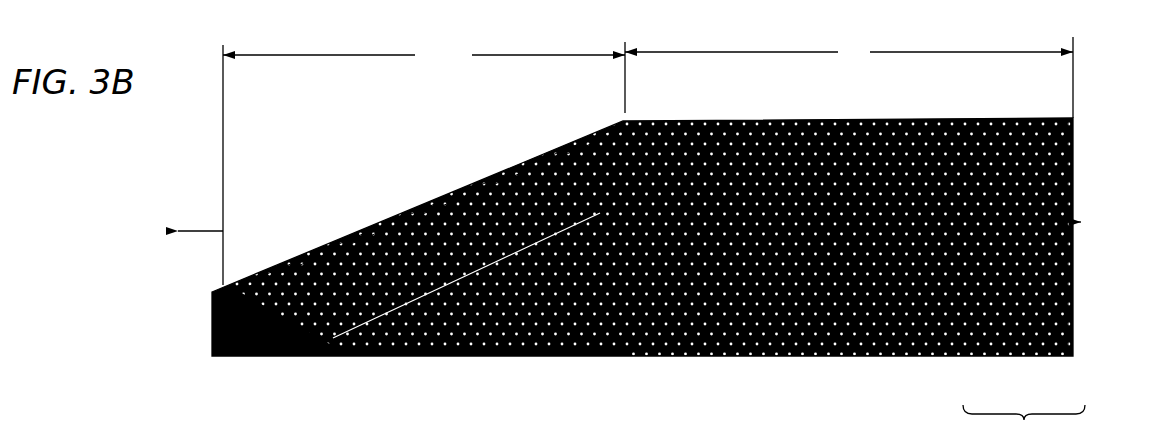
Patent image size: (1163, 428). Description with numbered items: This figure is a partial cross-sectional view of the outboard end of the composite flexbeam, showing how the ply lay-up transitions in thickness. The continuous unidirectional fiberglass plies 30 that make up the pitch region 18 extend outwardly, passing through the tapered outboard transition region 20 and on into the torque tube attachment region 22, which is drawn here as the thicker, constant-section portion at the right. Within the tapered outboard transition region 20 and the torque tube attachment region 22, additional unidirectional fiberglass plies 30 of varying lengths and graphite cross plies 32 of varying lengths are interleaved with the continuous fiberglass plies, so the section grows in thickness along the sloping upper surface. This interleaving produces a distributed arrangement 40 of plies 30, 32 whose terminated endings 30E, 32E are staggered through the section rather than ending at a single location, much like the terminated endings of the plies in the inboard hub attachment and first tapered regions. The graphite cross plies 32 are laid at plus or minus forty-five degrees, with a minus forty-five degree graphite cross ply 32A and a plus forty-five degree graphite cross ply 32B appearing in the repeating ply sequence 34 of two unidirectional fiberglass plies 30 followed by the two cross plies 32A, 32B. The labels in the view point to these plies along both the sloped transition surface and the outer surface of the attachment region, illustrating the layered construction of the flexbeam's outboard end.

The pitch region 18 is at (186, 233).
The tapered outboard transition region 20 is at (424, 163).
The torque tube attachment region 22 is at (849, 77).
The unidirectional fiberglass plies 30 is at (537, 157).
The terminated endings of the unidirectional fiberglass plies 30E is at (392, 357).
The graphite cross plies 32 is at (1024, 416).
The minus forty-five degree graphite cross ply 32A is at (392, 219).
The plus forty-five degree graphite cross ply 32B is at (447, 195).
The terminated endings of the graphite cross plies 32E is at (433, 357).
The ply sequence 34 is at (1087, 229).
The distributed arrangement of plies 40 is at (276, 357).